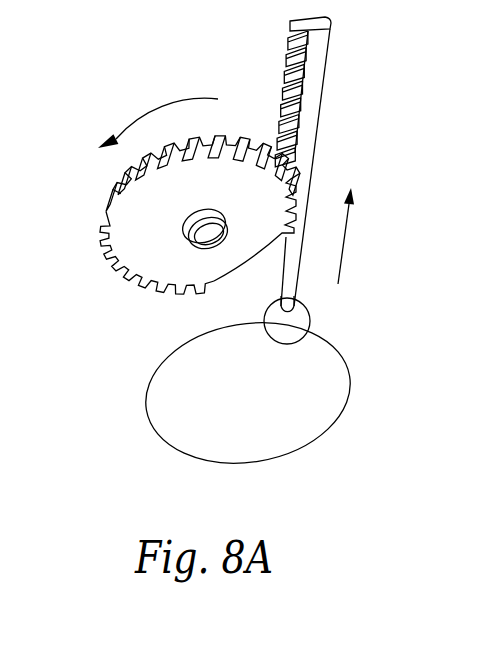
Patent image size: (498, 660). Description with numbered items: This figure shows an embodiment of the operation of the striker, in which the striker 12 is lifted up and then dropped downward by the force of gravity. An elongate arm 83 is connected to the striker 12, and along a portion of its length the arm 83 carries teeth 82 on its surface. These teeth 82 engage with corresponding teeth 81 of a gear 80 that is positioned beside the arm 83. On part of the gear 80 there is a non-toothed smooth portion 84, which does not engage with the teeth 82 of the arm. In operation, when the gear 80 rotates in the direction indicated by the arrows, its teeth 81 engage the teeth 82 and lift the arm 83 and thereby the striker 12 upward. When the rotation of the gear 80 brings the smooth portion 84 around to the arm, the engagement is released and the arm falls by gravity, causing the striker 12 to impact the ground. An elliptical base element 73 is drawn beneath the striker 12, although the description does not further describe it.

The gear 80 is at (140, 222).
The teeth of the gear 81 is at (142, 290).
The teeth of the arm 82 is at (285, 68).
The elongate arm 83 is at (318, 50).
The non-toothed smooth portion 84 is at (248, 262).
The striker 12 is at (293, 334).
The base disc 73 is at (170, 411).